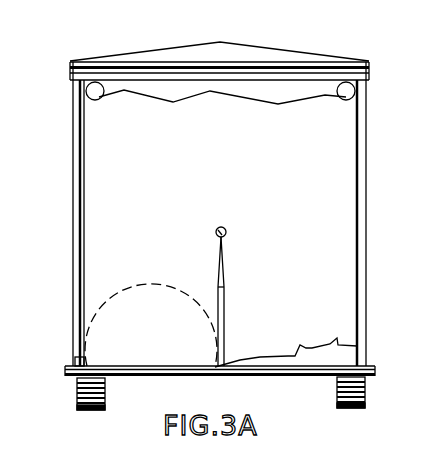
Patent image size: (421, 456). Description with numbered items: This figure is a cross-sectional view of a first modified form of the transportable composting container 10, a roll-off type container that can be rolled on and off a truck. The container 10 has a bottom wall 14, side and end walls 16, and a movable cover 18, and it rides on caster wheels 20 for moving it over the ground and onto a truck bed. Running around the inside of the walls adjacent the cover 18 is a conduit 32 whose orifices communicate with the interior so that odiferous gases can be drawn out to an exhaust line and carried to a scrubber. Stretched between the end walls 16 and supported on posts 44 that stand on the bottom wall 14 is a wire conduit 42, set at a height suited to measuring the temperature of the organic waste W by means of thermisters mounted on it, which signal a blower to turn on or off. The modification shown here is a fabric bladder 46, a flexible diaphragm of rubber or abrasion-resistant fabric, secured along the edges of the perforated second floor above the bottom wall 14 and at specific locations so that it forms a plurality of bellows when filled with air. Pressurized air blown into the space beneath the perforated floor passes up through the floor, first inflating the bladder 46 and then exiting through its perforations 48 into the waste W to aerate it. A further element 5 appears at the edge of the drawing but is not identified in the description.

The transportable composting container 10 is at (245, 82).
The bottom wall 14 is at (241, 353).
The side and end walls 16 is at (73, 235).
The movable cover 18 is at (165, 50).
The caster wheels 20 is at (77, 397).
The conduit 32 is at (100, 98).
The waste W is at (192, 95).
The conduit 42 is at (225, 228).
The posts 44 is at (218, 265).
The fabric bladder 46 is at (148, 282).
The perforations 48 is at (120, 287).
The unidentified element 5 is at (416, 315).